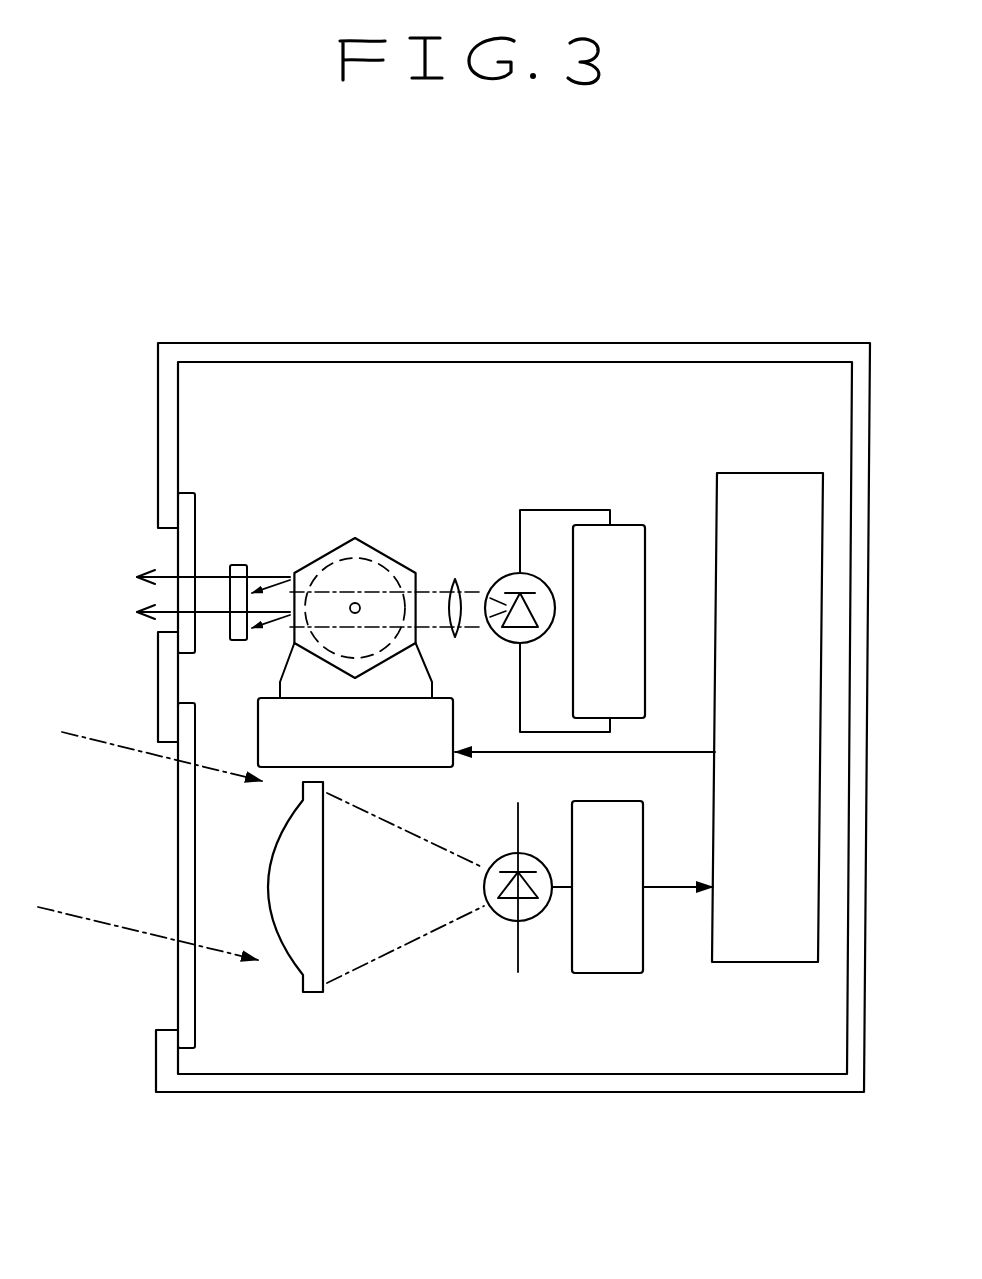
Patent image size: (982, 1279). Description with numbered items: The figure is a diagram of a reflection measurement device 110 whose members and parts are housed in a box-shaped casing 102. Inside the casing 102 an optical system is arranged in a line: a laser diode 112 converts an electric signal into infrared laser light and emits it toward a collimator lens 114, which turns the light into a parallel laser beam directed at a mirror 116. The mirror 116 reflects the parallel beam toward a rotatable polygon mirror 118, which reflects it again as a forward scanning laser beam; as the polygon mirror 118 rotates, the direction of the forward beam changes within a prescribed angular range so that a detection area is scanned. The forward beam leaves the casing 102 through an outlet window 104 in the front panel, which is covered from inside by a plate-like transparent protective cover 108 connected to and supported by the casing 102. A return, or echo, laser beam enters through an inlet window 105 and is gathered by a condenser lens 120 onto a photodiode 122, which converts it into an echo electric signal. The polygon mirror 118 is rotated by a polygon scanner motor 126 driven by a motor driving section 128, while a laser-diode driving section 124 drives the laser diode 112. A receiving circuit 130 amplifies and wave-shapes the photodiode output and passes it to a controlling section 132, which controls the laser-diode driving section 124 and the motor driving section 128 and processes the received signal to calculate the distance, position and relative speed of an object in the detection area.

The casing 102 is at (418, 362).
The outlet window 104 is at (162, 589).
The inlet window 105 is at (168, 973).
The protective cover 108 is at (183, 545).
The reflection measurement device 110 is at (803, 316).
The laser diode 112 is at (493, 638).
The collimator lens 114 is at (458, 580).
The mirror 116 is at (240, 565).
The polygon mirror 118 is at (350, 556).
The condenser lens 120 is at (268, 888).
The photodiode 122 is at (502, 922).
The laser-diode driving section 124 is at (632, 522).
The polygon scanner motor 126 is at (390, 575).
The motor driving section 128 is at (423, 767).
The receiving circuit 130 is at (613, 973).
The controlling section 132 is at (787, 473).